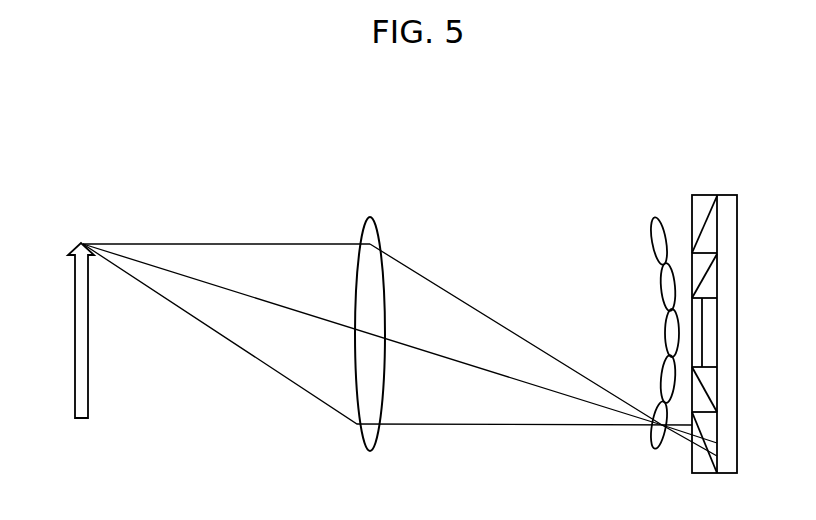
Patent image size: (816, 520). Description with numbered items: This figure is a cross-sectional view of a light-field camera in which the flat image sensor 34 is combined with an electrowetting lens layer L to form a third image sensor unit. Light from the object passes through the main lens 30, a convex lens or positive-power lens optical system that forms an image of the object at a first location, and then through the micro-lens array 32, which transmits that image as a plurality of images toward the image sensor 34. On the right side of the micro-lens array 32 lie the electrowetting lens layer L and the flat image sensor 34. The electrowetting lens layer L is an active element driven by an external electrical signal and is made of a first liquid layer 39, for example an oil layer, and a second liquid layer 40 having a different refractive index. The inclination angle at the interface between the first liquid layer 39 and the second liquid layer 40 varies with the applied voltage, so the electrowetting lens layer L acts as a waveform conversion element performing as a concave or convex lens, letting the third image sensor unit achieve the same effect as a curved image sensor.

The main lens 30 is at (370, 217).
The micro-lens array 32 is at (655, 236).
The image sensor 34 is at (727, 195).
The first liquid layer 39 is at (708, 236).
The second liquid layer 40 is at (700, 195).
The electrowetting lens layer L is at (623, 182).